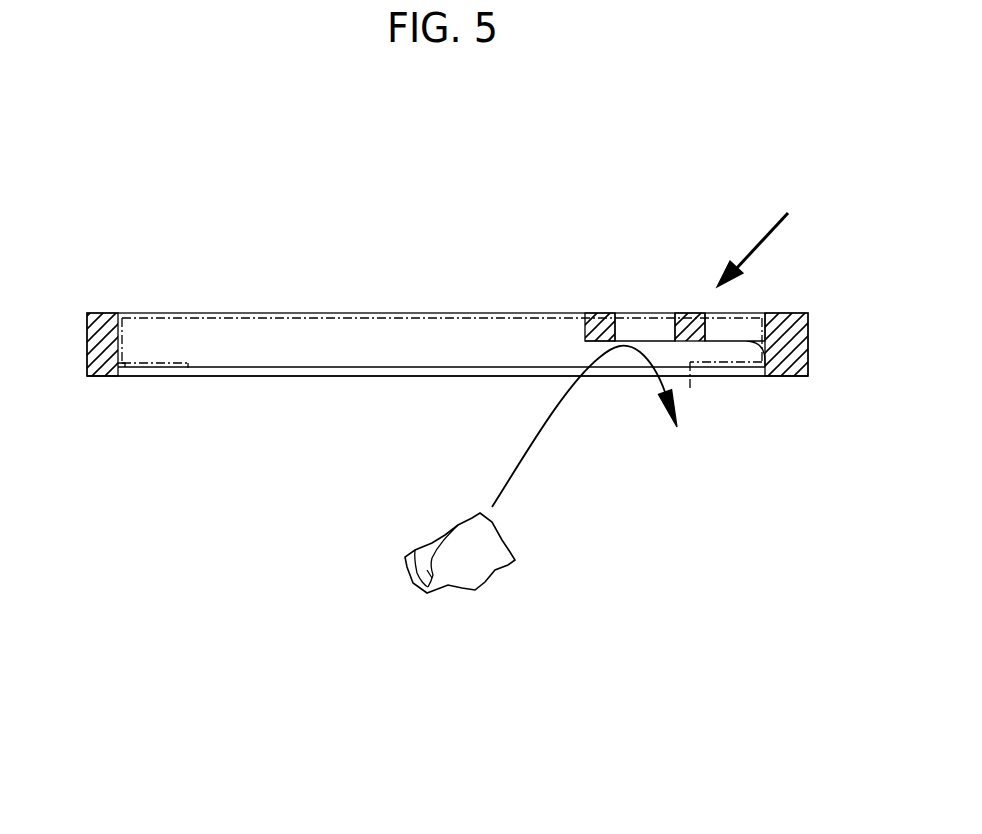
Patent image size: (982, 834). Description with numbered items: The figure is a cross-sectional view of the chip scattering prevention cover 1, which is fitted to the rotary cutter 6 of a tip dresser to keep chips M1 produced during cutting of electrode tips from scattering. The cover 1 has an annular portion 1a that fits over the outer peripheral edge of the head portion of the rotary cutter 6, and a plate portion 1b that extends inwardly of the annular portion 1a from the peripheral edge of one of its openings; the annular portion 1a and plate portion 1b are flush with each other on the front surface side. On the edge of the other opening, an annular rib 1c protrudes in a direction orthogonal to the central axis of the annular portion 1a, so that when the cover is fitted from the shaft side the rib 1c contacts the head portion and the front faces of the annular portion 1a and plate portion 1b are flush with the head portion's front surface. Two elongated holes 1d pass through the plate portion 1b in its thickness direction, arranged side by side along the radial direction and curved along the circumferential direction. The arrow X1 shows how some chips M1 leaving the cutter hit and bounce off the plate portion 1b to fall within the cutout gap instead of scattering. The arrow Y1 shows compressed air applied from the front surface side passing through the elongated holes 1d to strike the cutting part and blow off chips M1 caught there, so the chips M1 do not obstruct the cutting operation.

The chip scattering prevention cover 1 is at (742, 194).
The annular portion 1a is at (113, 313).
The plate portion 1b is at (593, 312).
The annular rib 1c is at (355, 376).
The elongated holes 1d is at (708, 325).
The rotary cutter 6 is at (190, 381).
The arrow X1 is at (584, 426).
The arrow Y1 is at (762, 250).
The chips M1 is at (490, 560).